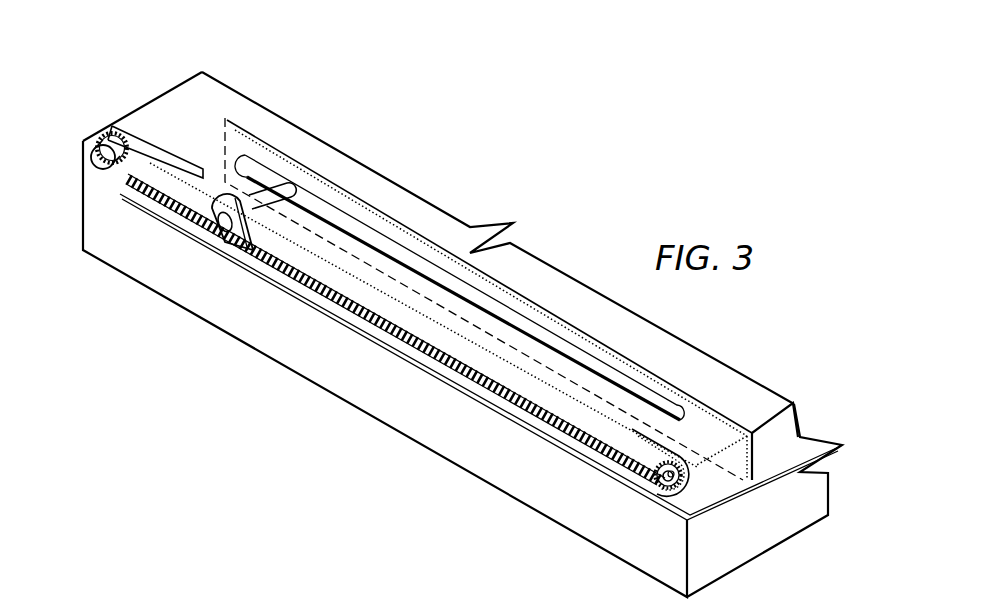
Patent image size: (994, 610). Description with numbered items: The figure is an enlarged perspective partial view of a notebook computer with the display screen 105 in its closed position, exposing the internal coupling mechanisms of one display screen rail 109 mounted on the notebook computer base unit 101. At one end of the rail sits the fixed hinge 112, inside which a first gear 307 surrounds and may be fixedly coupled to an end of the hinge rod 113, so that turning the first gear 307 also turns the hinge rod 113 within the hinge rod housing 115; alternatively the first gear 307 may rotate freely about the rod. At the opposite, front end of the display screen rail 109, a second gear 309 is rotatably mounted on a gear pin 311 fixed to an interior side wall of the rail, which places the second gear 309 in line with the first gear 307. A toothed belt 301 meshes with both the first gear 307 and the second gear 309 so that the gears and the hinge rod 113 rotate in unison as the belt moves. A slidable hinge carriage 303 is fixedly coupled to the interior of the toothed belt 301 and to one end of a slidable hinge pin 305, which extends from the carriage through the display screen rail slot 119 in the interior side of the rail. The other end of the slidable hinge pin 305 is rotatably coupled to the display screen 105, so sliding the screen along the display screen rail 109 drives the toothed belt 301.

The notebook computer base unit 101 is at (790, 507).
The display screen 105 is at (741, 392).
The display screen rail 109 is at (712, 452).
The fixed hinge 112 is at (90, 145).
The hinge rod 113 is at (106, 160).
The hinge rod housing 115 is at (238, 113).
The display screen rail slot 119 is at (551, 344).
The toothed belt 301 is at (407, 340).
The slidable hinge carriage 303 is at (233, 236).
The slidable hinge pin 305 is at (261, 197).
The first gear 307 is at (103, 128).
The second gear 309 is at (677, 490).
The gear pin 311 is at (662, 479).